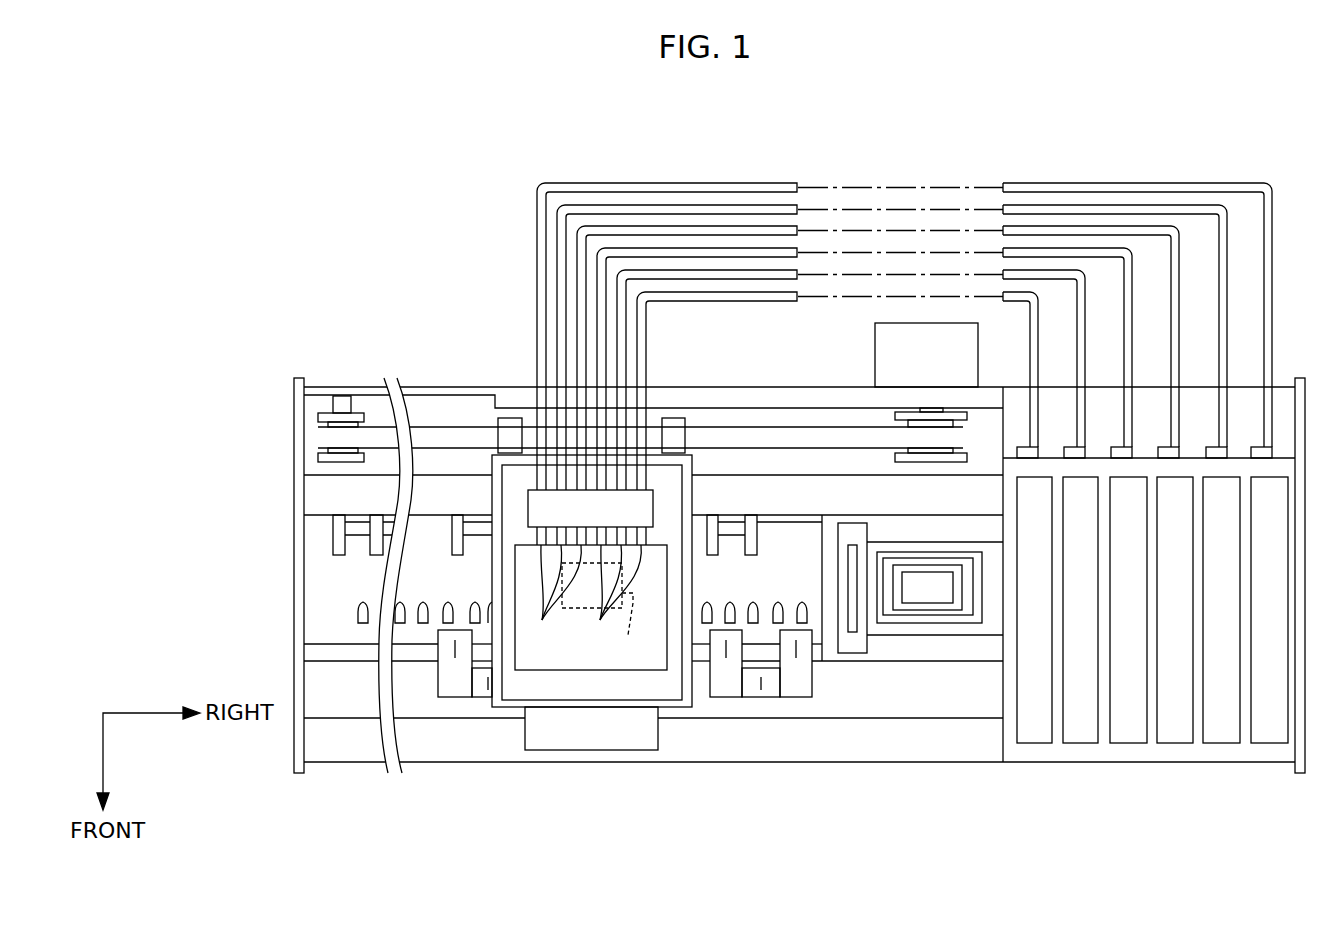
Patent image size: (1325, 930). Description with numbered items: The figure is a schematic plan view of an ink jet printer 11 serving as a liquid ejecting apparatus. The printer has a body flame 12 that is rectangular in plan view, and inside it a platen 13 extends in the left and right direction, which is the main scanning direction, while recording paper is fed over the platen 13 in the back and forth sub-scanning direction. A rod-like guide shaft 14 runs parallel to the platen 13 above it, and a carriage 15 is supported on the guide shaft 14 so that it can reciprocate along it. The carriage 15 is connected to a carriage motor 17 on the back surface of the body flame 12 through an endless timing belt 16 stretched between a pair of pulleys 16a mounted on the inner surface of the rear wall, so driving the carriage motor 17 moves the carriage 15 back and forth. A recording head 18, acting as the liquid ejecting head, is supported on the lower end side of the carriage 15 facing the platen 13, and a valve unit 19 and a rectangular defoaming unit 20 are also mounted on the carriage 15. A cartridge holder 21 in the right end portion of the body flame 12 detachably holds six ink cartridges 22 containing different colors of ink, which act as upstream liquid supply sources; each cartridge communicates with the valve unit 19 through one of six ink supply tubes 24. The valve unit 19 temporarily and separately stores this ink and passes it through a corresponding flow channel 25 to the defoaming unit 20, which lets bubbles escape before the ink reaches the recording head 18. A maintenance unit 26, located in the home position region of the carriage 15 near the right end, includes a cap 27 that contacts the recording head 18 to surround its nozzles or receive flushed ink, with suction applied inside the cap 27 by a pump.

The ink jet printer 11 is at (388, 290).
The body flame 12 is at (437, 387).
The platen 13 is at (310, 593).
The guide shaft 14 is at (310, 490).
The carriage 15 is at (495, 492).
The endless timing belt 16 is at (731, 425).
The pulleys 16a is at (356, 405).
The carriage motor 17 is at (878, 355).
The recording head 18 is at (591, 607).
The valve unit 19 is at (652, 507).
The defoaming unit 20 is at (607, 675).
The cartridge holder 21 is at (1283, 757).
The ink cartridges 22 is at (1037, 738).
The ink supply tubes 24 is at (702, 208).
The flow channel 25 is at (584, 597).
The maintenance unit 26 is at (928, 637).
The cap 27 is at (912, 592).